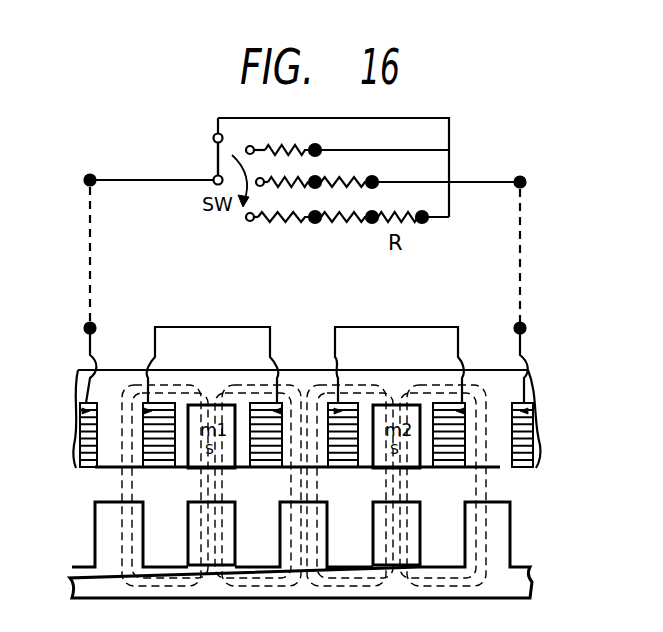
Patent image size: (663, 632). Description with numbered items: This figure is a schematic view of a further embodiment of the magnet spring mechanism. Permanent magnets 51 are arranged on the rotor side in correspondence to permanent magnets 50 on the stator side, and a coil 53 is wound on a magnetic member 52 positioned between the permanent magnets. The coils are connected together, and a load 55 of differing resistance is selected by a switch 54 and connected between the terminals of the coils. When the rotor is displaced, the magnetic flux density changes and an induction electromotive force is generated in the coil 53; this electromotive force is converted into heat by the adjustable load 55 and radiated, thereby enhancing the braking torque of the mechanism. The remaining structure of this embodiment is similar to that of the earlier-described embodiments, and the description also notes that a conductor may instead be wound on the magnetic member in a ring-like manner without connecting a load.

The permanent magnet 50 is at (235, 532).
The permanent magnet 51 is at (195, 458).
The magnetic member 52 is at (288, 458).
The coil 53 is at (81, 469).
The switch 54 is at (215, 160).
The load 55 is at (403, 146).